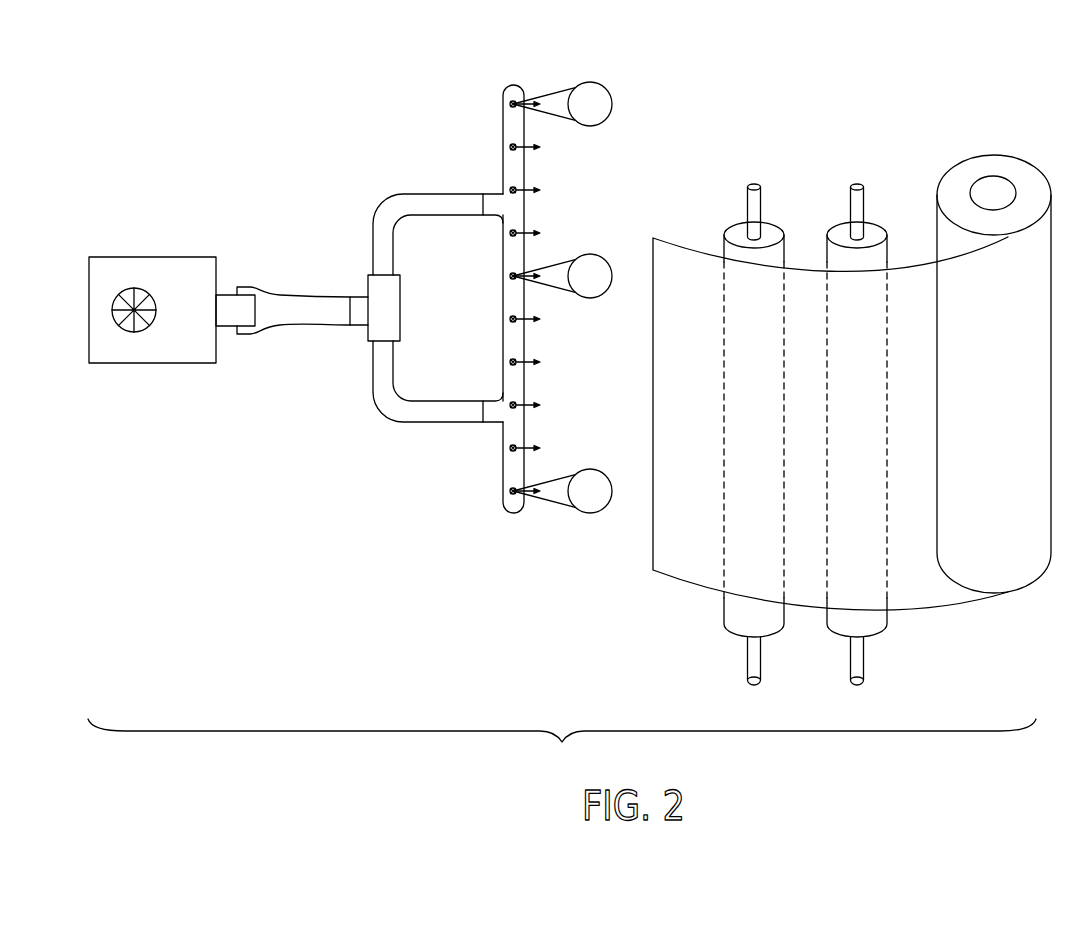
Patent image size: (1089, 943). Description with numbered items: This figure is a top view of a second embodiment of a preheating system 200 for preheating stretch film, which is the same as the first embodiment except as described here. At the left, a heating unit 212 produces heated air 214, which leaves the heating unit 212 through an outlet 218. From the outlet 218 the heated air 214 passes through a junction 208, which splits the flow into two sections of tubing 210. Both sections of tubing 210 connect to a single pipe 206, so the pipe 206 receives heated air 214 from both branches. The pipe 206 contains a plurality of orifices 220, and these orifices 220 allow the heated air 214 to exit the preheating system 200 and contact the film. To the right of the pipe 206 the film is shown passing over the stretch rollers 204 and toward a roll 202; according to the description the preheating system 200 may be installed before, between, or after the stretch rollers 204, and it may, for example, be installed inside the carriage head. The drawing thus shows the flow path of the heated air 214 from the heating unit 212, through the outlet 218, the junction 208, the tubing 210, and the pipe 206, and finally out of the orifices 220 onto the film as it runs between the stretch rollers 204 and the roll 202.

The preheating system 200 is at (336, 154).
The web roll 202 is at (1023, 588).
The stretch rollers 204 is at (768, 220).
The pipe 206 is at (502, 103).
The junction 208 is at (482, 193).
The tubing 210 is at (403, 193).
The heating unit 212 is at (165, 257).
The heated air 214 is at (603, 82).
The outlet 218 is at (226, 326).
The orifices 220 is at (515, 495).